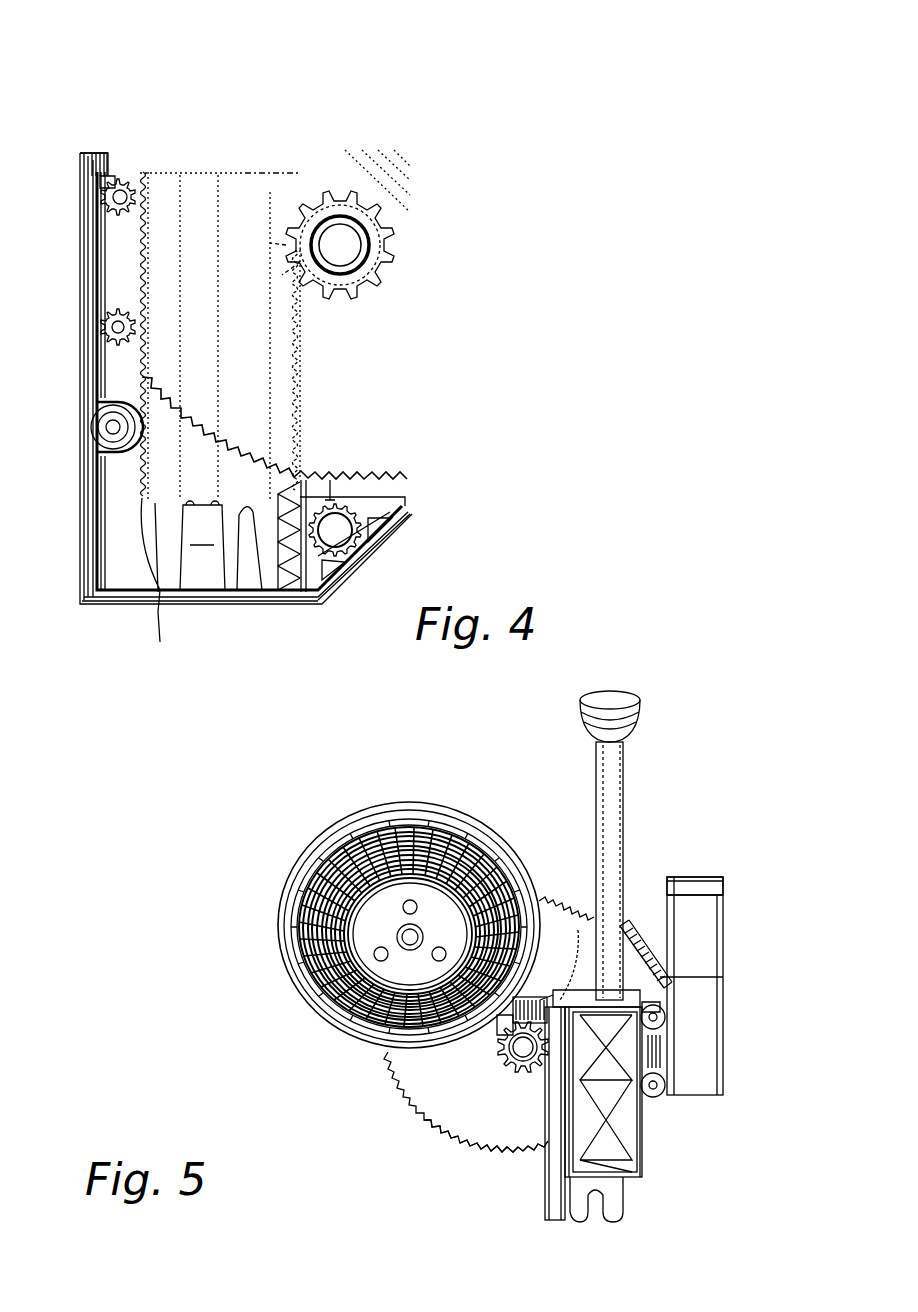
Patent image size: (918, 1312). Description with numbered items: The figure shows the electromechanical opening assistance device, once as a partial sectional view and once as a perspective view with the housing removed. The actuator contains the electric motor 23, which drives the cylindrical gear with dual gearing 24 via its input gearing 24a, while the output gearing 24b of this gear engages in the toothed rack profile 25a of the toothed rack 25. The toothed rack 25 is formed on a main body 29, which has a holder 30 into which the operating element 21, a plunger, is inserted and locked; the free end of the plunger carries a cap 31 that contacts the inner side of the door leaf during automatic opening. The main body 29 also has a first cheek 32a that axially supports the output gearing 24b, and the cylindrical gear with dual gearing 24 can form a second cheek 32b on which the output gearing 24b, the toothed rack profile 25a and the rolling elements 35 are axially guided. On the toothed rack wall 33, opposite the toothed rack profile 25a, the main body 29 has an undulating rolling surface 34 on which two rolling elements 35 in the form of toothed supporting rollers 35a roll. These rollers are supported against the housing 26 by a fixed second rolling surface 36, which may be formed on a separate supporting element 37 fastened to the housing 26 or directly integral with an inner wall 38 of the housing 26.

In FIG. 5, the operating element 21 is at (612, 782).
In FIG. 5, the electric motor 23 is at (407, 808).
In FIG. 5, the cylindrical gear with dual gearing 24 is at (386, 1054).
In FIG. 4, the input gearing 24a is at (394, 478).
In FIG. 5, the input gearing 24a is at (493, 1147).
In FIG. 4, the output gearing 24b is at (393, 244).
In FIG. 5, the output gearing 24b is at (497, 1033).
In FIG. 4, the toothed rack 25 is at (261, 592).
In FIG. 4, the toothed rack profile 25a is at (292, 352).
In FIG. 5, the toothed rack profile 25a is at (551, 1000).
In FIG. 4, the housing 26 is at (82, 428).
In FIG. 5, the main body 29 is at (583, 1133).
In FIG. 5, the holder 30 is at (622, 930).
In FIG. 5, the cap 31 is at (612, 700).
In FIG. 5, the first cheek 32a is at (555, 1195).
In FIG. 5, the second cheek 32b is at (447, 1100).
In FIG. 5, the toothed rack wall 33 is at (648, 1002).
In FIG. 5, the rolling surface 34 is at (645, 1148).
In FIG. 4, the rolling elements 35 is at (128, 197).
In FIG. 5, the rolling elements 35 is at (667, 1017).
In FIG. 4, the toothed supporting rollers 35a is at (132, 325).
In FIG. 5, the toothed supporting rollers 35a is at (667, 1085).
In FIG. 4, the second rolling surface 36 is at (105, 178).
In FIG. 5, the second rolling surface 36 is at (663, 892).
In FIG. 5, the supporting element 37 is at (710, 918).
In FIG. 4, the inner wall 38 is at (98, 178).